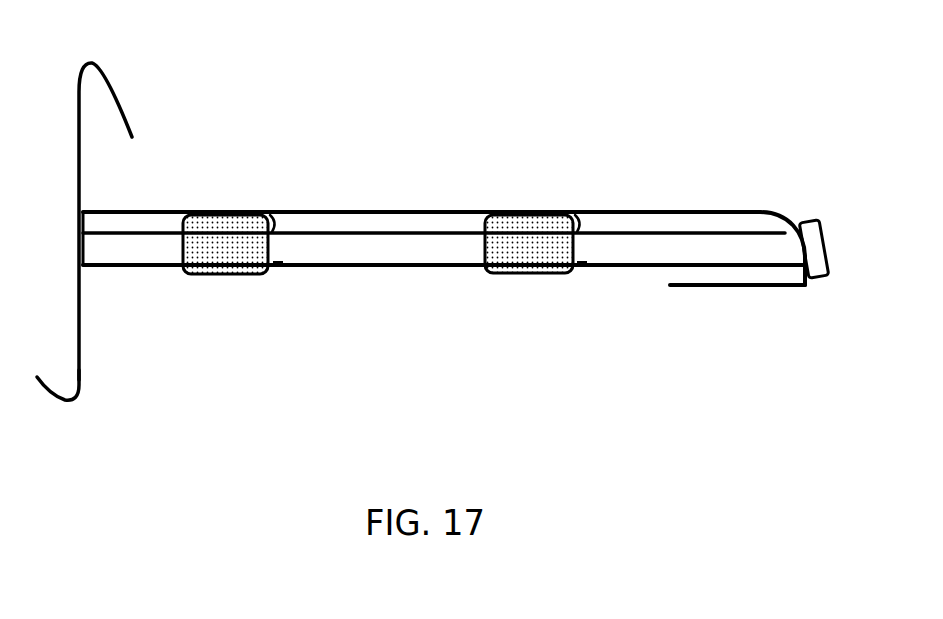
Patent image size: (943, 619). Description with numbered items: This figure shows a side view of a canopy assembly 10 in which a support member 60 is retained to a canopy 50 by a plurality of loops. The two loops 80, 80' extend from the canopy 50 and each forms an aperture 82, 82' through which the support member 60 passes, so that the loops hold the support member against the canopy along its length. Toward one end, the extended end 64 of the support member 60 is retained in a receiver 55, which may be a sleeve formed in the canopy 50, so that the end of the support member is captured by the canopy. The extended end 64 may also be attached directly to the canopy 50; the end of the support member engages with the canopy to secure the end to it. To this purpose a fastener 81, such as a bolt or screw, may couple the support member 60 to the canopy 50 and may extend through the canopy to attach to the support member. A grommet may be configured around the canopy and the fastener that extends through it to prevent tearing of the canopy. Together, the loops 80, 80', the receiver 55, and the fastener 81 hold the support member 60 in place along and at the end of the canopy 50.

The hearing device 10 is at (460, 217).
The canopy 50 is at (382, 211).
The receiver 55 is at (732, 288).
The support member 60 is at (372, 252).
The extended end 64 is at (787, 243).
The loop 80 is at (225, 301).
The loop 80' is at (529, 303).
The aperture 82 is at (286, 298).
The aperture 82' is at (585, 301).
The fastener 81 is at (818, 266).